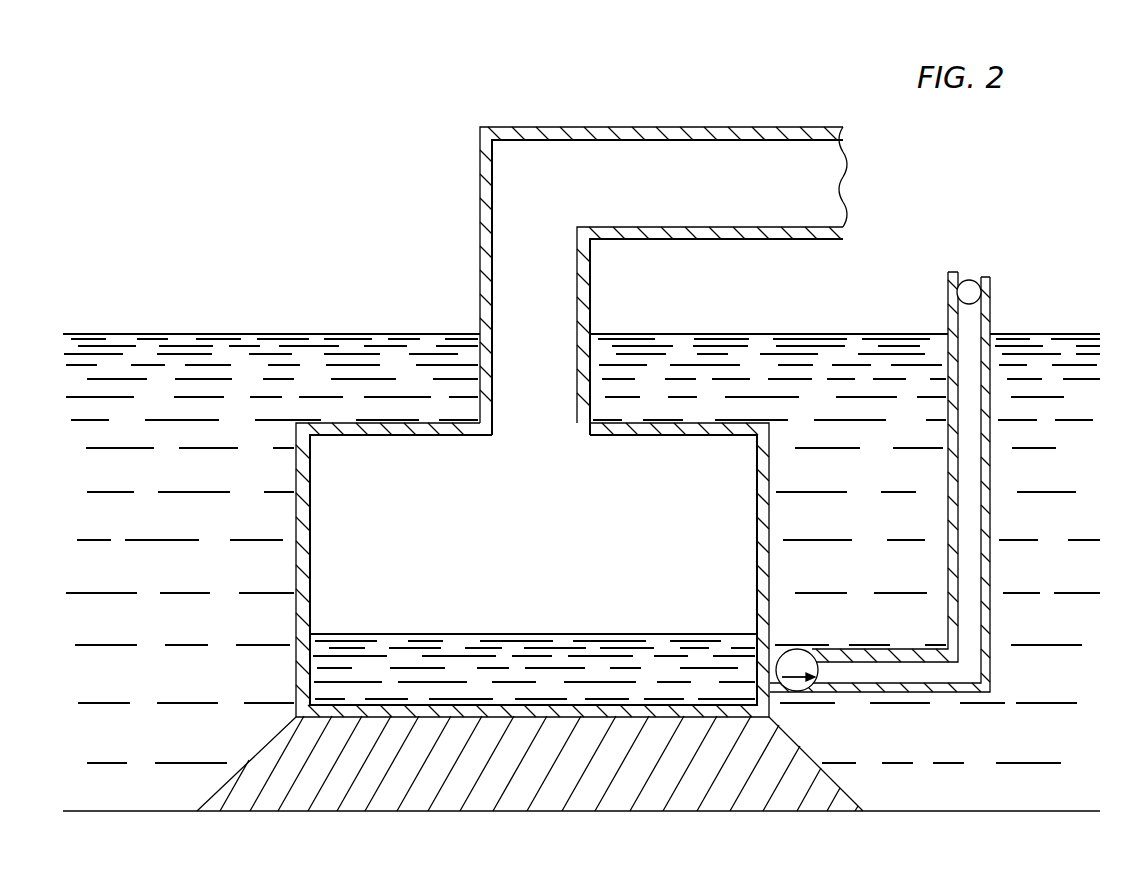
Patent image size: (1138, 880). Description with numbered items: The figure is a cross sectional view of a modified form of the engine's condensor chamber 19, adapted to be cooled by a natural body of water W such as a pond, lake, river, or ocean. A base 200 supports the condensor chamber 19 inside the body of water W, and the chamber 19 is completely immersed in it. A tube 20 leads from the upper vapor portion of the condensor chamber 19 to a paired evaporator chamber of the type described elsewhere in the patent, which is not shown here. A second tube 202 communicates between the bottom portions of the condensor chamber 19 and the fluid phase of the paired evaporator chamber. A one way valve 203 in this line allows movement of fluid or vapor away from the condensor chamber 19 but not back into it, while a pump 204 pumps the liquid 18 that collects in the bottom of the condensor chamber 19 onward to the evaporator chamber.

The body of water W is at (177, 334).
The liquid 18 is at (601, 632).
The condensor chamber 19 is at (534, 503).
The tube 20 is at (726, 195).
The base 200 is at (438, 806).
The tube 202 is at (972, 333).
The one way valve 203 is at (970, 280).
The pump 204 is at (808, 653).